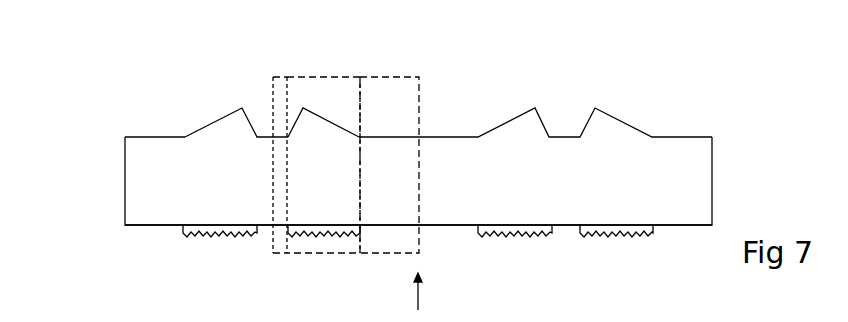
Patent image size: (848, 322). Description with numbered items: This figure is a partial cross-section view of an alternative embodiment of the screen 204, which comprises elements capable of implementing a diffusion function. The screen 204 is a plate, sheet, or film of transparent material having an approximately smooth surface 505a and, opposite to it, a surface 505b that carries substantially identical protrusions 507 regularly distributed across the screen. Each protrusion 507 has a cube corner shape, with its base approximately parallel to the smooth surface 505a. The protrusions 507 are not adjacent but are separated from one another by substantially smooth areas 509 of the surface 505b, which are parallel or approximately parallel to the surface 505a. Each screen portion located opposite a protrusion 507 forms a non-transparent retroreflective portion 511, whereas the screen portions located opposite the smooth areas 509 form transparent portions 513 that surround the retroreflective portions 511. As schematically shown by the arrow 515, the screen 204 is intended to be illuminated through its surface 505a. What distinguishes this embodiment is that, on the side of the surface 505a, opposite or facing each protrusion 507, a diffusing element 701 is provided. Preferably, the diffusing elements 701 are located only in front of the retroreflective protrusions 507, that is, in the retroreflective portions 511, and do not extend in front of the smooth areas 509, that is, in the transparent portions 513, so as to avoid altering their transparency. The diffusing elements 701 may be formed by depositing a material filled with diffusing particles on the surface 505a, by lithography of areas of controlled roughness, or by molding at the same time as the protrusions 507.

The screen 204 is at (118, 182).
The smooth surface 505a is at (150, 226).
The surface 505b is at (163, 137).
The protrusion 507 is at (218, 128).
The smooth area 509 is at (447, 137).
The retroreflective portion 511 is at (316, 77).
The transparent portion 513 is at (281, 77).
The arrow 515 is at (418, 297).
The diffusing element 701 is at (237, 238).